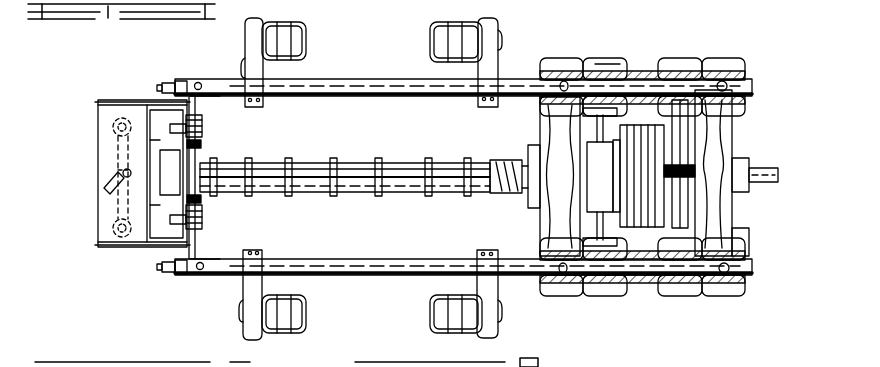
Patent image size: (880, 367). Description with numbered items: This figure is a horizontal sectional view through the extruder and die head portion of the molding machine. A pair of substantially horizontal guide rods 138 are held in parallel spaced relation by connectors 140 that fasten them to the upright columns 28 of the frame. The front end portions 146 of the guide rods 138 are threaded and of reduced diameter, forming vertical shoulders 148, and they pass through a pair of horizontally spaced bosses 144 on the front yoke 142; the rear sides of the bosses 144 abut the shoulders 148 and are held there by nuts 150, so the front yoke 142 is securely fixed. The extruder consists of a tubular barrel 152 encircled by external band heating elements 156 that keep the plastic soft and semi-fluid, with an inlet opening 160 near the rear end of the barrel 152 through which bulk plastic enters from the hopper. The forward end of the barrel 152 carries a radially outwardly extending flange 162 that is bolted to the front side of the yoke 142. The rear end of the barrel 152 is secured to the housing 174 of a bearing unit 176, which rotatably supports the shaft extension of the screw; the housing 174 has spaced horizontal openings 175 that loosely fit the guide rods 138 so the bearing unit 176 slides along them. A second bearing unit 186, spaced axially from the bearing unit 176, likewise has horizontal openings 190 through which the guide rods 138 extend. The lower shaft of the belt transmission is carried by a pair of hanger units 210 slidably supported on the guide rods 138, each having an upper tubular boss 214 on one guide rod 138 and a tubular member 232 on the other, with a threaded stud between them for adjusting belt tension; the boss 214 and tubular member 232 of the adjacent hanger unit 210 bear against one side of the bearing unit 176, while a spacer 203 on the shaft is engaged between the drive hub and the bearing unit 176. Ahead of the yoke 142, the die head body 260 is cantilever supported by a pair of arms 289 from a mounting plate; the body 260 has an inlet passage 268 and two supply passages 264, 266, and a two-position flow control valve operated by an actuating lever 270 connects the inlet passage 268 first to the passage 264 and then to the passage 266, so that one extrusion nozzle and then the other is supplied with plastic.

The columns 28 is at (306, 44).
The guide rods 138 is at (355, 92).
The connectors 140 is at (263, 100).
The front yoke 142 is at (202, 143).
The bosses 144 is at (195, 92).
The front end portions 146 is at (168, 84).
The shoulders 148 is at (198, 82).
The nuts 150 is at (180, 84).
The tubular barrel 152 is at (408, 168).
The band heating elements 156 is at (336, 160).
The inlet opening 160 is at (503, 160).
The flange 162 is at (192, 196).
The housing 174 is at (545, 230).
The horizontal openings 175 is at (566, 80).
The bearing unit 176 is at (556, 56).
The second bearing unit 186 is at (728, 128).
The horizontal openings 190 is at (728, 82).
The spacer 203 is at (625, 215).
The hanger units 210 is at (600, 65).
The tubular boss 214 is at (603, 290).
The tubular member 232 is at (620, 64).
The body 260 is at (104, 250).
The passage 264 is at (112, 145).
The passage 266 is at (115, 208).
The inlet passage 268 is at (112, 128).
The actuating lever 270 is at (105, 180).
The arms 289 is at (128, 100).